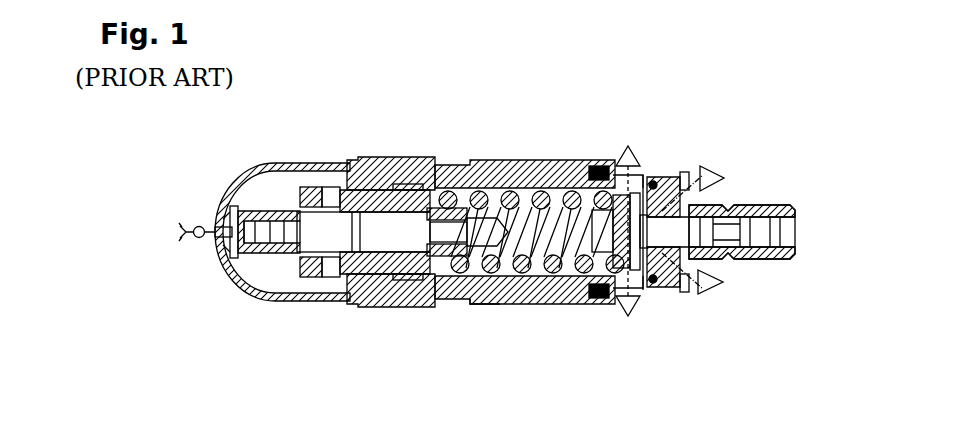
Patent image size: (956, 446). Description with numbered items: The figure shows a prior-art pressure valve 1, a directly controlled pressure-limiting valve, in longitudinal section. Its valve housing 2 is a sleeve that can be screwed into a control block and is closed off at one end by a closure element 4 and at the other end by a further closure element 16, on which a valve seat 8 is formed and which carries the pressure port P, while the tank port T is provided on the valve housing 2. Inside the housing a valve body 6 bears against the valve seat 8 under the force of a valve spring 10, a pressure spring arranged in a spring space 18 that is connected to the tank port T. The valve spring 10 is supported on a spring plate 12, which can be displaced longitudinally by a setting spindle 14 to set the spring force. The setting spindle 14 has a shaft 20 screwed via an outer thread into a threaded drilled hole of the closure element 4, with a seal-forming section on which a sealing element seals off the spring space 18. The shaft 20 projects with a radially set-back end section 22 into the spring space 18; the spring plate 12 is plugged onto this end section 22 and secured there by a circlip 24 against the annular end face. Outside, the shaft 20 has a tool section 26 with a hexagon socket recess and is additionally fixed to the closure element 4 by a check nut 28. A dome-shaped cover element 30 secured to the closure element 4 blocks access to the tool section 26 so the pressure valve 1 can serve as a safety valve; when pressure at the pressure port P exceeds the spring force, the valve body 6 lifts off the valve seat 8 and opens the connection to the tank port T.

The pressure valve 1 is at (688, 124).
The valve housing 2 is at (467, 168).
The closure element 4 is at (360, 157).
The valve body 6 is at (648, 290).
The valve seat 8 is at (645, 192).
The valve spring 10 is at (560, 192).
The spring plate 12 is at (426, 193).
The setting spindle 14 is at (392, 216).
The further closure element 16 is at (716, 207).
The spring space 18 is at (578, 288).
The shaft 20 is at (300, 272).
The end section 22 is at (486, 302).
The circlip 24 is at (500, 220).
The tool section 26 is at (239, 260).
The check nut 28 is at (311, 292).
The cover element 30 is at (253, 168).